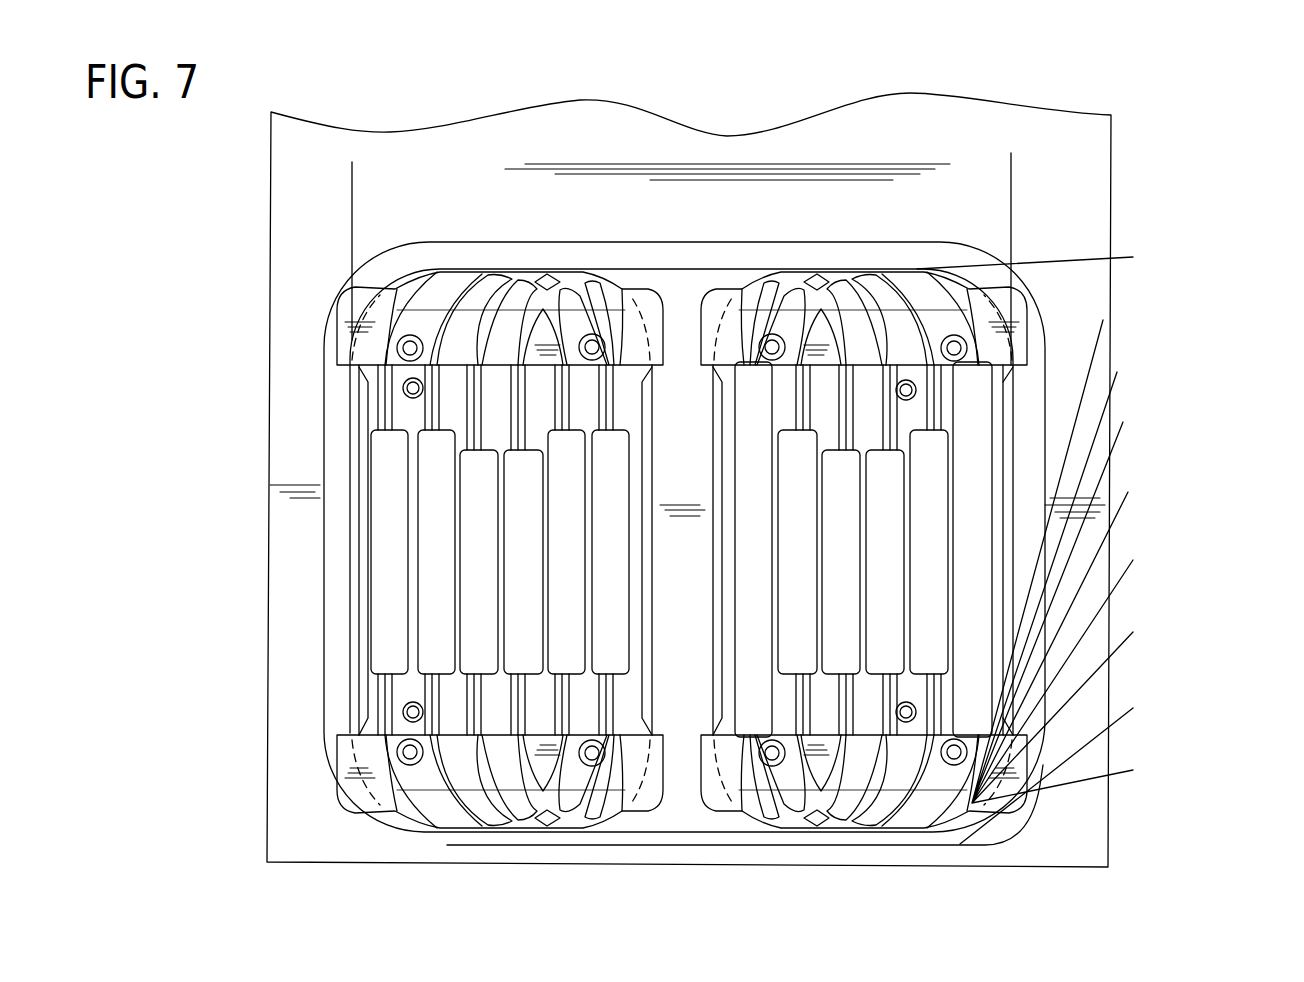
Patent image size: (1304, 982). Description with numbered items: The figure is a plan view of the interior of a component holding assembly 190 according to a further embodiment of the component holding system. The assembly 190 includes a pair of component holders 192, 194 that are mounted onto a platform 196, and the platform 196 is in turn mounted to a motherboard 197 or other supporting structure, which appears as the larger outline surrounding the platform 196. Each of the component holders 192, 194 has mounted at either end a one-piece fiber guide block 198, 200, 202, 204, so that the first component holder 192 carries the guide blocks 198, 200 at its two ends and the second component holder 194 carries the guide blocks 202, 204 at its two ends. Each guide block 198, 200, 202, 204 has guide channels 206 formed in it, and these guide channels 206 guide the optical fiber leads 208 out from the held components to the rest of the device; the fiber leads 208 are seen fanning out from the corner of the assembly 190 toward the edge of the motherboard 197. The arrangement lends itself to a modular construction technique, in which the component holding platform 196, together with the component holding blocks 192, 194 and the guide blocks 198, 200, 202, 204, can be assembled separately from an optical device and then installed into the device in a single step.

The component holding assembly 190 is at (1200, 90).
The component holder 192 is at (365, 398).
The component holder 194 is at (1000, 393).
The platform 196 is at (480, 253).
The motherboard 197 is at (1088, 137).
The fiber guide block 198 is at (362, 340).
The fiber guide block 200 is at (353, 793).
The fiber guide block 202 is at (958, 268).
The fiber guide block 204 is at (975, 800).
The guide channels 206 is at (438, 822).
The optical fiber leads 208 is at (1070, 808).